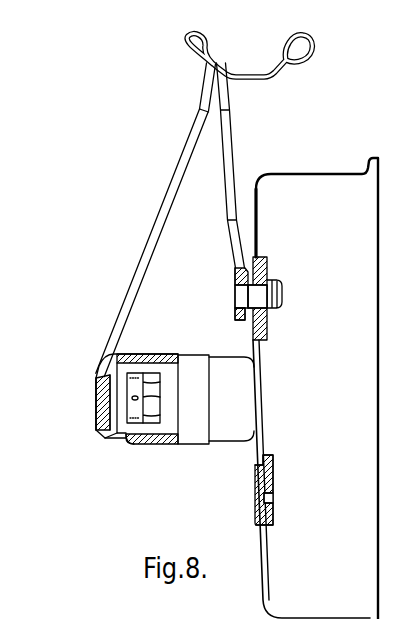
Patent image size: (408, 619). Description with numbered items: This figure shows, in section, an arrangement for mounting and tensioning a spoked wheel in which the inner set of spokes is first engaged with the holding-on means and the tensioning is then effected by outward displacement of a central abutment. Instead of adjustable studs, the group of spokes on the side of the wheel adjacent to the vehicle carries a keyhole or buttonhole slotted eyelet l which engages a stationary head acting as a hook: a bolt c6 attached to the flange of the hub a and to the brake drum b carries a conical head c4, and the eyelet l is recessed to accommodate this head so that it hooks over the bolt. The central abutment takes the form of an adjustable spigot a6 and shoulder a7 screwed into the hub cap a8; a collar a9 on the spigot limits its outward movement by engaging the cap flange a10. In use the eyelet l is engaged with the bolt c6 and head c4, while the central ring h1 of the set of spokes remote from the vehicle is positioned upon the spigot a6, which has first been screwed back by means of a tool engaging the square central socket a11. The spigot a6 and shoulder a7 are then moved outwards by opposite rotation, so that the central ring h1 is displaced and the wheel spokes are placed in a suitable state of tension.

The hub a is at (256, 482).
The brake drum b is at (273, 476).
The slotted eyelet l is at (240, 280).
The conical head c4 is at (240, 295).
The bolt c6 is at (247, 290).
The adjustable spigot a6 is at (95, 415).
The shoulder a7 is at (112, 436).
The hub cap a8 is at (169, 445).
The collar a9 is at (141, 446).
The cap flange a10 is at (132, 437).
The square central socket a11 is at (95, 393).
The central ring h1 is at (98, 427).